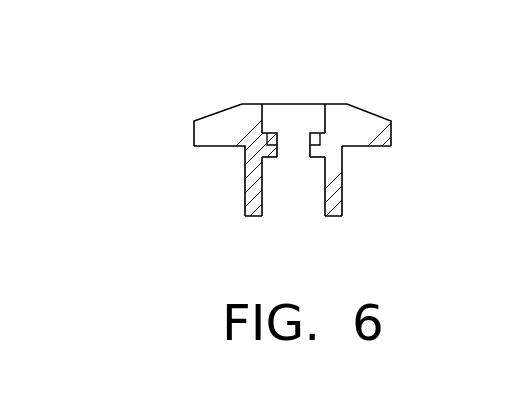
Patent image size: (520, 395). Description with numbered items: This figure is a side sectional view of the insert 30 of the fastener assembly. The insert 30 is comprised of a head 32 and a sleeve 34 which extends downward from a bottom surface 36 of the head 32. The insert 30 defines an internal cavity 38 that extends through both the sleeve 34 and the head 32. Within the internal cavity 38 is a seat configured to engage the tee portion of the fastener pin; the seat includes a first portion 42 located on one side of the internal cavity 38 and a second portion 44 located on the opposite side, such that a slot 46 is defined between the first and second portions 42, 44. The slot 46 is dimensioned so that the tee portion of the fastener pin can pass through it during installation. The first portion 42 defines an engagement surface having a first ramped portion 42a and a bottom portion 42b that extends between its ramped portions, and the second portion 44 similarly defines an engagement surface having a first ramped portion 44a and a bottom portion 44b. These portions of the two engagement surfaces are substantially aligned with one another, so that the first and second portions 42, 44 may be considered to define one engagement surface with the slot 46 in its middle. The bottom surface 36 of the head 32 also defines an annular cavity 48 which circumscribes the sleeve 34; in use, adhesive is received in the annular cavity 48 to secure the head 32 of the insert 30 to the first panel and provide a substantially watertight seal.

The insert 30 is at (137, 79).
The head 32 is at (362, 110).
The sleeve 34 is at (342, 195).
The bottom surface 36 is at (389, 147).
The internal cavity 38 is at (317, 211).
The first portion 42 is at (276, 158).
The first ramped portion 42a is at (277, 132).
The bottom portion 42b is at (252, 114).
The second portion 44 is at (313, 158).
The first ramped portion 44a is at (310, 131).
The bottom portion 44b is at (341, 112).
The slot 46 is at (308, 158).
The annular cavity 48 is at (211, 116).